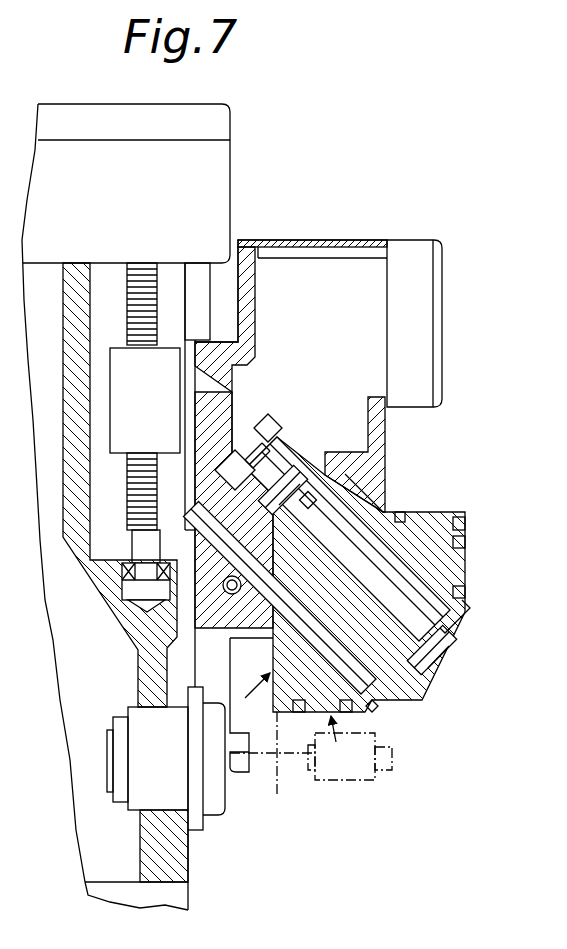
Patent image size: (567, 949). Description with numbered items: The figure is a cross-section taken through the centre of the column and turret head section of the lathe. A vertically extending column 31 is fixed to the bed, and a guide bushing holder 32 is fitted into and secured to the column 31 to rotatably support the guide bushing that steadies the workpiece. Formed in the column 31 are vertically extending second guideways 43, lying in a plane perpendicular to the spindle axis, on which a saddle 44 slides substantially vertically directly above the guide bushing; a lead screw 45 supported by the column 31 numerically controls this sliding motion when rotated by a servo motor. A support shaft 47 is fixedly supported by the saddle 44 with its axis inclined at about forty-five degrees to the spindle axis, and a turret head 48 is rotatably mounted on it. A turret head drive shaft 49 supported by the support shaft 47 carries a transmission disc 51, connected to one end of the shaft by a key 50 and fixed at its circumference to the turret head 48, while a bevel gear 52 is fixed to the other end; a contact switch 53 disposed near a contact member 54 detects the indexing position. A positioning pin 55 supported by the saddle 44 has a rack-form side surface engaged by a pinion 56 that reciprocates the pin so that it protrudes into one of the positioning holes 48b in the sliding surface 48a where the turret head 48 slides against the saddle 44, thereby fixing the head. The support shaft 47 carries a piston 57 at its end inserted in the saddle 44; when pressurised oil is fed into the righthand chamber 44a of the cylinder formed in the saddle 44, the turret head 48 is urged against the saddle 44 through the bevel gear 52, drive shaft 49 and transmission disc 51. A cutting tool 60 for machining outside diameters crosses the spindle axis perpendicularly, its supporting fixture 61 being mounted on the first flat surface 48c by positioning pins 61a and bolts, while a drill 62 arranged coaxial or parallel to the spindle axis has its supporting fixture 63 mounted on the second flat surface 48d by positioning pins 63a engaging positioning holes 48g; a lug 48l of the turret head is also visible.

The column 31 is at (188, 870).
The guide bushing holder 32 is at (205, 828).
The second guideways 43 is at (205, 270).
The saddle 44 is at (255, 285).
The righthand chamber 44a is at (380, 460).
The lead screw 45 is at (140, 270).
The support shaft 47 is at (370, 485).
The turret head 48 is at (408, 540).
The sliding surface 48a is at (362, 520).
The positioning holes 48b is at (460, 512).
The first flat surface 48c is at (243, 706).
The second flat surface 48d is at (349, 741).
The positioning holes 48g is at (330, 694).
The block lug 48l is at (318, 653).
The turret head drive shaft 49 is at (373, 607).
The key 50 is at (455, 640).
The transmission disc 51 is at (462, 620).
The bevel gear 52 is at (280, 490).
The contact switch 53 is at (273, 418).
The contact member 54 is at (262, 440).
The positioning pin 55 is at (212, 500).
The pinion 56 is at (217, 583).
The piston 57 is at (308, 494).
The cutting tool 60 is at (231, 763).
The supporting fixture 61 is at (240, 727).
The positioning pins 61a is at (267, 653).
The drill 62 is at (278, 795).
The supporting fixture 63 is at (360, 780).
The positioning pins 63a is at (290, 755).